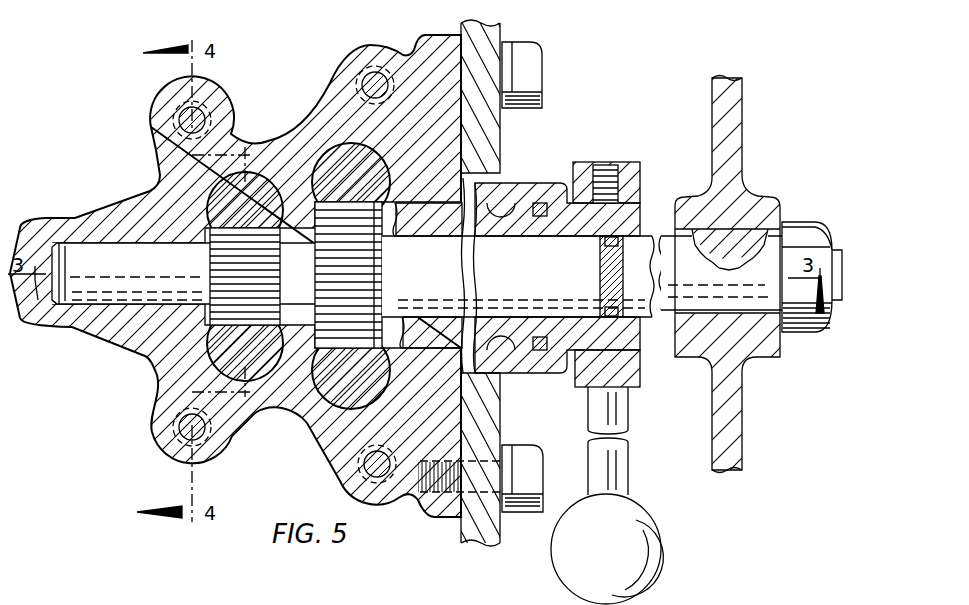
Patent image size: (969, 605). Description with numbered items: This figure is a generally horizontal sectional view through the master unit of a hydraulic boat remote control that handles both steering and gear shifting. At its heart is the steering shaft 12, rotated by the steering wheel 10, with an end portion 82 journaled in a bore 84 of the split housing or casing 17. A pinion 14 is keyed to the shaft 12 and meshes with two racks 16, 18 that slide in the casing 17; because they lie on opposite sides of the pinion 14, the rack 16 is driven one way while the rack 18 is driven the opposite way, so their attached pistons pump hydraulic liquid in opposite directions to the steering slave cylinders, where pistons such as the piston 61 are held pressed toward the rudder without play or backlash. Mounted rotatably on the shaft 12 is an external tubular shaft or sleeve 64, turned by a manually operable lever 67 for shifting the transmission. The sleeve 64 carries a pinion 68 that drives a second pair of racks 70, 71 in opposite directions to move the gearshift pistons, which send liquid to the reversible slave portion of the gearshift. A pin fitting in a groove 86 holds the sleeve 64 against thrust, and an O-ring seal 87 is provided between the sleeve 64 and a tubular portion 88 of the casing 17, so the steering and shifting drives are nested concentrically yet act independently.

The steering wheel 10 is at (732, 274).
The shaft 12 is at (643, 236).
The pinion 14 is at (217, 270).
The rack 16 is at (213, 199).
The split housing or casing 17 is at (317, 452).
The rack 18 is at (215, 352).
The piston 61 is at (600, 260).
The external tubular shaft or sleeve 64 is at (642, 340).
The manually operable lever 67 is at (628, 455).
The pinion 68 is at (322, 266).
The rack 70 is at (378, 177).
The rack 71 is at (380, 385).
The end portion 82 is at (110, 257).
The bore 84 is at (76, 250).
The groove 86 is at (500, 208).
The O-ring seal 87 is at (540, 350).
The tubular portion 88 is at (510, 362).